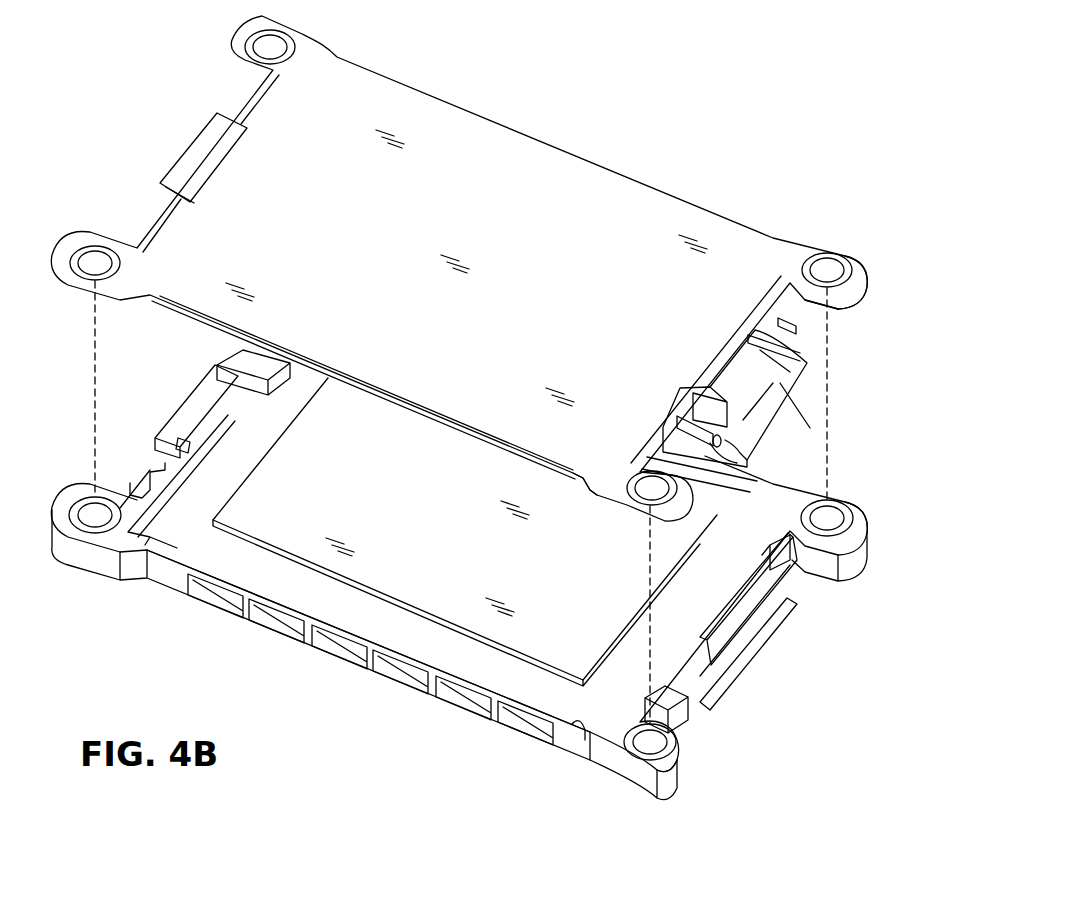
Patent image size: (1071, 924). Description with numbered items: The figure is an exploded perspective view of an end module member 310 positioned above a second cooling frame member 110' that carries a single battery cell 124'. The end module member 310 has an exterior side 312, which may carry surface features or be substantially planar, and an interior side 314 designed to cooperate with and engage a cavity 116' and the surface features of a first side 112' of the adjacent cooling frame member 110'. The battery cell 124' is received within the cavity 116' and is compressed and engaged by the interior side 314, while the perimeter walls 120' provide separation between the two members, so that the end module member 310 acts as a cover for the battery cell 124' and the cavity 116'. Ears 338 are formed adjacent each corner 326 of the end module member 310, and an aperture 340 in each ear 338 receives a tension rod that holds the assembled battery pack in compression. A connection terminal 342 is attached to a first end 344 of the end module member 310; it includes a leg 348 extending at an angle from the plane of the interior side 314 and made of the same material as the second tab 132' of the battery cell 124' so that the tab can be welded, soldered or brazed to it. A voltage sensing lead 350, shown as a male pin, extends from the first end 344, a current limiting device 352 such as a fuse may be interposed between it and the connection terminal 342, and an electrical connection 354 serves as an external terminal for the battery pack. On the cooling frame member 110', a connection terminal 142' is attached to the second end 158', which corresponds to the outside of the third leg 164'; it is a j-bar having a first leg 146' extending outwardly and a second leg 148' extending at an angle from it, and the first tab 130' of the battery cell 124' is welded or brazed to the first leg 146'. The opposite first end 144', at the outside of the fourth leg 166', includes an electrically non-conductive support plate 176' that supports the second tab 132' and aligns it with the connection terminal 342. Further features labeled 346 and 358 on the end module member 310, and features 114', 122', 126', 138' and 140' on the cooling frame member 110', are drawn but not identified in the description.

The end module member 310 is at (633, 80).
The exterior side 312 is at (615, 186).
The interior side 314 is at (416, 408).
The corner 326 is at (600, 462).
The ears 338 is at (863, 265).
The aperture 340 is at (826, 262).
The connection terminal 342 is at (790, 411).
The first end 344 is at (840, 297).
The connector housing 346 is at (785, 390).
The leg 348 is at (780, 425).
The voltage sensing lead 350 is at (795, 345).
The current limiting device 352 is at (798, 322).
The electrical connection 354 is at (725, 450).
The bracket strip 358 is at (152, 222).
The cooling frame member 110' is at (474, 568).
The first side 112' is at (246, 616).
The front wall 114' is at (363, 641).
The cavity 116' is at (494, 717).
The perimeter walls 120' is at (546, 752).
The slot 122' is at (363, 659).
The battery cell 124' is at (465, 532).
The corner edge 126' is at (583, 770).
The first tab 130' is at (216, 362).
The second tab 132' is at (765, 599).
The mounting boss 138' is at (784, 628).
The mounting hole 140' is at (754, 627).
The connection terminal 142' is at (175, 411).
The first end 144' is at (706, 712).
The first leg 146' is at (193, 481).
The second leg 148' is at (142, 436).
The second end 158' is at (82, 484).
The third leg 164' is at (131, 472).
The fourth leg 166' is at (808, 574).
The support plate 176' is at (752, 654).